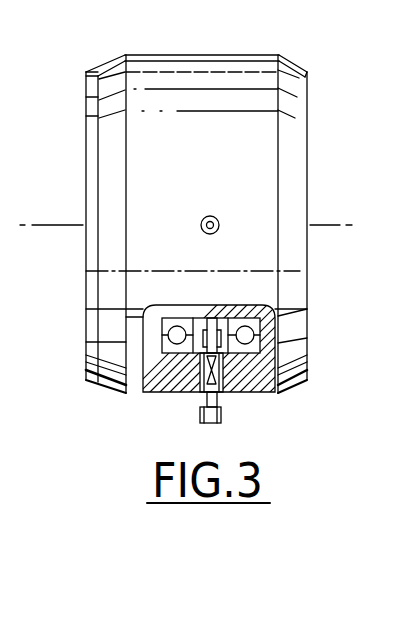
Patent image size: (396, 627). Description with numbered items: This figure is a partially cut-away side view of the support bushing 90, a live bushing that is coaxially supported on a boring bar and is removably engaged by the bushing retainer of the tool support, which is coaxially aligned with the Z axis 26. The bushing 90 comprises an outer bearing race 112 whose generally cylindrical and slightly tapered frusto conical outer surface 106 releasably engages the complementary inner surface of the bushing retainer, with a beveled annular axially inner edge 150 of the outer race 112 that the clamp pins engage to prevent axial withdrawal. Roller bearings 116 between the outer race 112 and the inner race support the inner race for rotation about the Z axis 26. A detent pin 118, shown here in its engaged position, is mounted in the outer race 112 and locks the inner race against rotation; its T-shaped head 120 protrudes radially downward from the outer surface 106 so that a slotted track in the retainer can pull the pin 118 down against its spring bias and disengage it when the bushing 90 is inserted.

The Z axis 26 is at (50, 222).
The support bushing 90 is at (229, 196).
The frusto conical outer surface 106 is at (158, 68).
The outer bearing race 112 is at (296, 275).
The roller bearings 116 is at (245, 326).
The detent pin 118 is at (225, 412).
The T-shaped head 120 is at (200, 416).
The beveled annular axially inner edge 150 is at (297, 72).